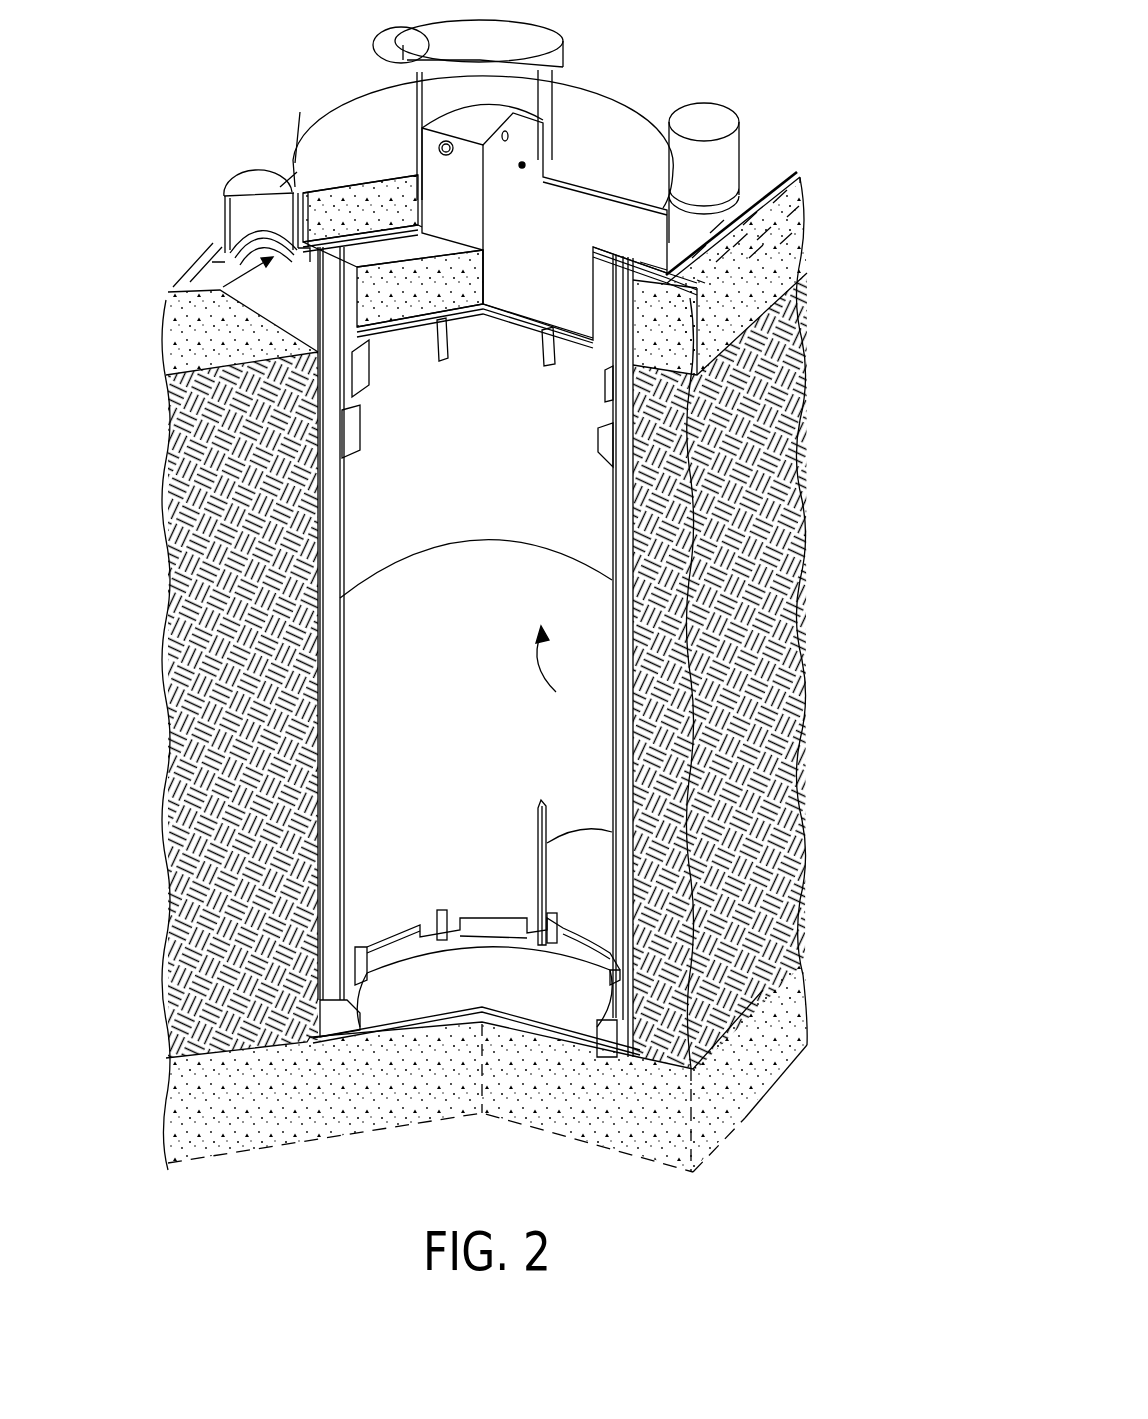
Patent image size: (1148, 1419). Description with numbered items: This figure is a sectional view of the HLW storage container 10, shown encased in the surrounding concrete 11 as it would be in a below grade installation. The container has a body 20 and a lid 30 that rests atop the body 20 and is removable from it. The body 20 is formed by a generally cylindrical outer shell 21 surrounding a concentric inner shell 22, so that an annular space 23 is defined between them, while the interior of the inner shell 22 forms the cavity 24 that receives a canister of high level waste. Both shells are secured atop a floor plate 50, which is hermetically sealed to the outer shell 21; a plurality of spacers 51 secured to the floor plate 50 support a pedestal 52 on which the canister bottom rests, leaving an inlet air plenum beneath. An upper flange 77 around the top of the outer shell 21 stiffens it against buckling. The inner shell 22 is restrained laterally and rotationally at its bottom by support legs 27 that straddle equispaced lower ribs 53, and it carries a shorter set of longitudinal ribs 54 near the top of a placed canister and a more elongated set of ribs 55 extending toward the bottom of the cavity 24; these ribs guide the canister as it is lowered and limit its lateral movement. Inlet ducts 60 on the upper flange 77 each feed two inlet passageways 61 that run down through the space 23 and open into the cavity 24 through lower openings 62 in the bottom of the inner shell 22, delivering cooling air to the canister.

The HLW storage container 10 is at (748, 176).
The surrounding concrete 11 is at (763, 594).
The body 20 is at (760, 190).
The outer shell 21 is at (640, 487).
The inner shell 22 is at (625, 542).
The space 23 is at (630, 468).
The cavity 24 is at (562, 678).
The support legs 27 is at (450, 935).
The lid 30 is at (618, 92).
The floor plate 50 is at (632, 1058).
The spacers 51 is at (481, 1005).
The pedestal 52 is at (537, 1000).
The lower ribs 53 is at (355, 990).
The ribs 54 is at (610, 440).
The ribs 55 is at (548, 843).
The inlet ducts 60 is at (720, 106).
The inlet passageways 61 is at (265, 262).
The lower openings 62 is at (497, 923).
The upper flange 77 is at (683, 230).